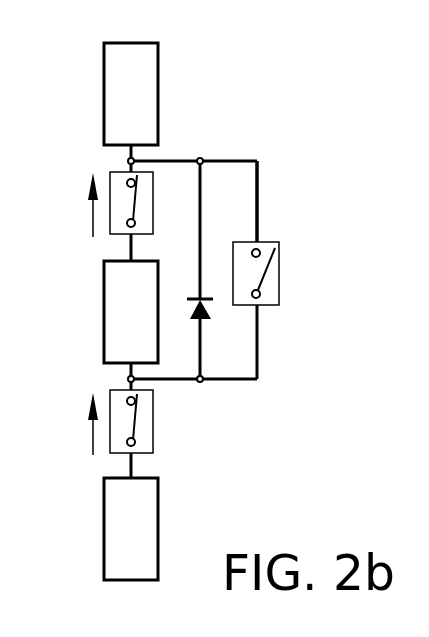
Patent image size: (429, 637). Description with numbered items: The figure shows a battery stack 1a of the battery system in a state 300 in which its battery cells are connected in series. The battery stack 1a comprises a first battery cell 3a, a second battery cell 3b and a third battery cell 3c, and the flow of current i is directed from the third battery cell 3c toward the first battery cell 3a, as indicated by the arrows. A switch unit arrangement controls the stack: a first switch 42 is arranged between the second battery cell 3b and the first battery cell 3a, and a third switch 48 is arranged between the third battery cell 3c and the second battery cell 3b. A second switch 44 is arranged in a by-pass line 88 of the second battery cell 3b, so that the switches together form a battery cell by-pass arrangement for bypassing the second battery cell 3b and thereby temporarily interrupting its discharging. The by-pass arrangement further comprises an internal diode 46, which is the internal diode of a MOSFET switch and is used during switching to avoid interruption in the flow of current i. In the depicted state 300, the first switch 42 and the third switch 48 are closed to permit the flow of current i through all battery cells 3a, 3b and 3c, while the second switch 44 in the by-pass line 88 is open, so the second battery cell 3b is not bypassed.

The battery stack 1a is at (276, 59).
The state 300 is at (299, 90).
The first battery cell 3a is at (103, 95).
The second battery cell 3b is at (103, 313).
The third battery cell 3c is at (103, 530).
The first switch 42 is at (153, 203).
The second switch 44 is at (281, 272).
The internal diode 46 is at (212, 306).
The third switch 48 is at (153, 420).
The by-pass line 88 is at (259, 205).
The flow of current i is at (93, 215).